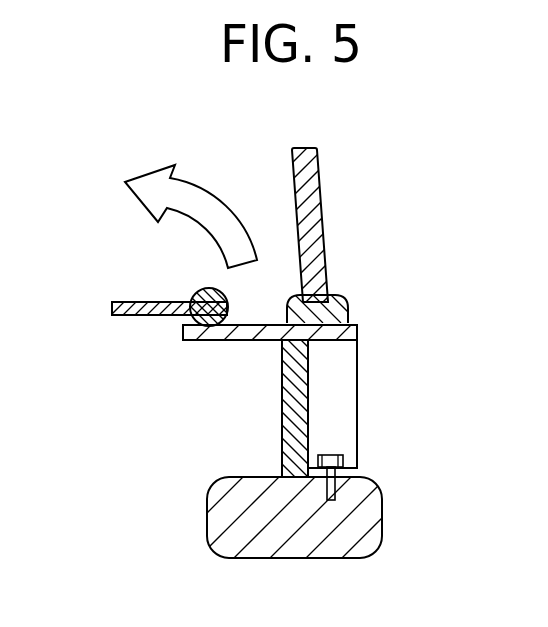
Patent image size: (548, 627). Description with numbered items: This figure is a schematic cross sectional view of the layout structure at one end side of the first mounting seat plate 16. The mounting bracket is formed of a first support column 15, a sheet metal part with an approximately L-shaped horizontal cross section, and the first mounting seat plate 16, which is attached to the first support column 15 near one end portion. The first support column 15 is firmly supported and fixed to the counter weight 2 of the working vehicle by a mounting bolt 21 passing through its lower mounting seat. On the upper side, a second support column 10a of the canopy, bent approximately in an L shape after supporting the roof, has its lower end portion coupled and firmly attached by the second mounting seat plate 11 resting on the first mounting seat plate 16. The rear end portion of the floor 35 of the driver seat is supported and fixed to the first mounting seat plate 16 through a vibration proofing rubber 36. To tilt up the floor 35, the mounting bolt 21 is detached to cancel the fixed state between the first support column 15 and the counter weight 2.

The second support column 10a is at (320, 223).
The second mounting seat plate 11 is at (340, 308).
The first mounting seat plate 16 is at (227, 339).
The first support column 15 is at (282, 428).
The mounting bolt 21 is at (333, 453).
The counter weight 2 is at (215, 540).
The floor 35 is at (140, 318).
The vibration proofing rubber 36 is at (197, 293).